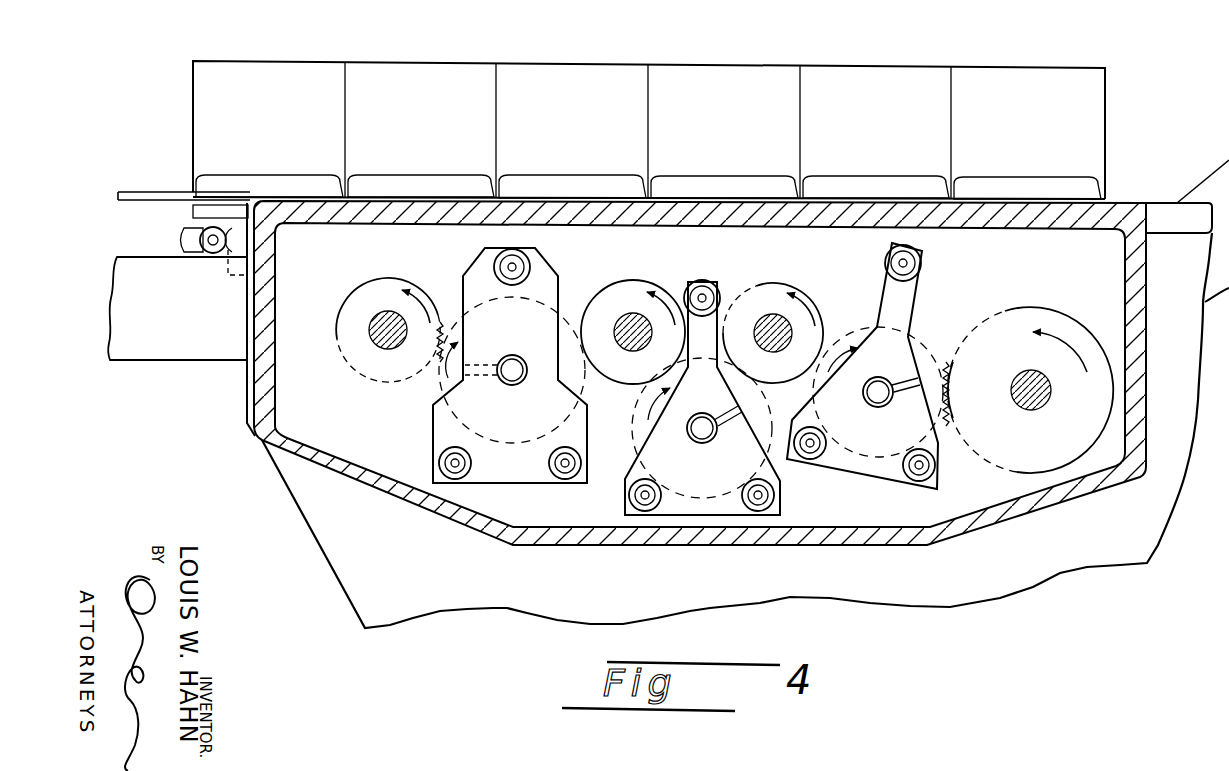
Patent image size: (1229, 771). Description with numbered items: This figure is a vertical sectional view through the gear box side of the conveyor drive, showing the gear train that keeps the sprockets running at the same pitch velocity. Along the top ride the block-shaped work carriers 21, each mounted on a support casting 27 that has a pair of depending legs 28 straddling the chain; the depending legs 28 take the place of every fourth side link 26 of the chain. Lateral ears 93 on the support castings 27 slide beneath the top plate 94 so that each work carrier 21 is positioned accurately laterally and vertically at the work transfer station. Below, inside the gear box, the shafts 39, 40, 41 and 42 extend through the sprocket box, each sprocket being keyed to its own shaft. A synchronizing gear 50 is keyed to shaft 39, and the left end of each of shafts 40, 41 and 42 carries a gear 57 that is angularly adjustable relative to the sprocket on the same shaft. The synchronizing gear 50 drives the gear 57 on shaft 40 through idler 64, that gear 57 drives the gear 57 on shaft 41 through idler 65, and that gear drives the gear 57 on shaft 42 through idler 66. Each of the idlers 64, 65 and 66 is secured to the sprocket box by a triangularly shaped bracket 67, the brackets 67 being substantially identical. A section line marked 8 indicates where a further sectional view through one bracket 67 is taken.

The work carrier 21 is at (193, 64).
The support casting 27 is at (526, 178).
The top plate 94 is at (137, 191).
The lateral ear 93 is at (193, 207).
The side link 26 is at (182, 239).
The depending leg 28 is at (212, 256).
The section line 8- 8 is at (511, 227).
The gear 57 is at (388, 278).
The shaft 42 is at (375, 343).
The shaft 41 is at (631, 352).
The shaft 40 is at (769, 353).
The shaft 39 is at (1037, 409).
The idler 66 is at (443, 388).
The idler 65 is at (636, 436).
The idler 64 is at (921, 336).
The triangularly shaped bracket 67 is at (538, 416).
The synchronizing gear 50 is at (1044, 308).